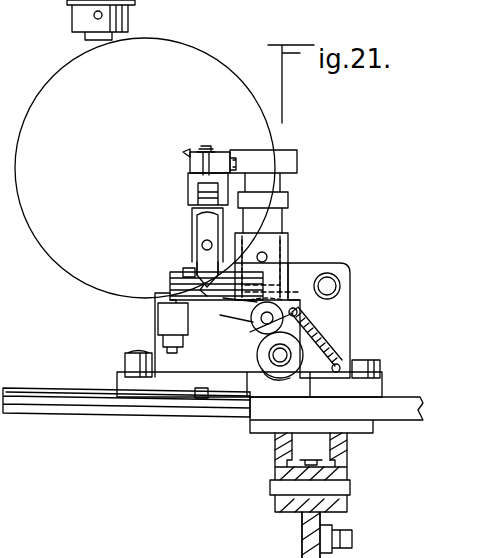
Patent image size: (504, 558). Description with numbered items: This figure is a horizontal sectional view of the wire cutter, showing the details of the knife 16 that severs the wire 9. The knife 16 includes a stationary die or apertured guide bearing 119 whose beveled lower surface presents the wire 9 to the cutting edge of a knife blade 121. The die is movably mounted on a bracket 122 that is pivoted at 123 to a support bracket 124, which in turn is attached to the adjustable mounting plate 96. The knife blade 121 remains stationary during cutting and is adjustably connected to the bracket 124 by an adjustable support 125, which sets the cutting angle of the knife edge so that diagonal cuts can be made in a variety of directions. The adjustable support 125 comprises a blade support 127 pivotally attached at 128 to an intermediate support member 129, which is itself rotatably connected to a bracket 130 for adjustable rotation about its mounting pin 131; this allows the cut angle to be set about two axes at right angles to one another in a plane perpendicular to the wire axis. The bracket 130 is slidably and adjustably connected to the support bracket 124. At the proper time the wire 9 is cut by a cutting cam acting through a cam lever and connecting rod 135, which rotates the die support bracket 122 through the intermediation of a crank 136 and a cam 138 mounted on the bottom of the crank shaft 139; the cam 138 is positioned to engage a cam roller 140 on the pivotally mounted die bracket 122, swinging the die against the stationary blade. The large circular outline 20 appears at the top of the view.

The wheel 20 is at (186, 44).
The adjustable support 125 is at (191, 149).
The mounting pin 131 is at (210, 146).
The bracket 130 is at (298, 162).
The knife 16 is at (302, 212).
The support bracket 124 is at (278, 223).
The intermediate support member 129 is at (195, 178).
The pivot 128 is at (210, 200).
The blade support 127 is at (194, 220).
The knife blade 121 is at (204, 229).
The stationary die or apertured guide bearing 119 is at (186, 290).
The bracket 122 is at (289, 280).
The pivot 123 is at (341, 286).
The wire 9 is at (203, 284).
The cam roller 140 is at (256, 323).
The crank shaft 139 is at (270, 355).
The cam 138 is at (270, 368).
The mounting plate 96 is at (382, 408).
The crank 136 is at (302, 525).
The cam lever and connecting rod 135 is at (333, 539).